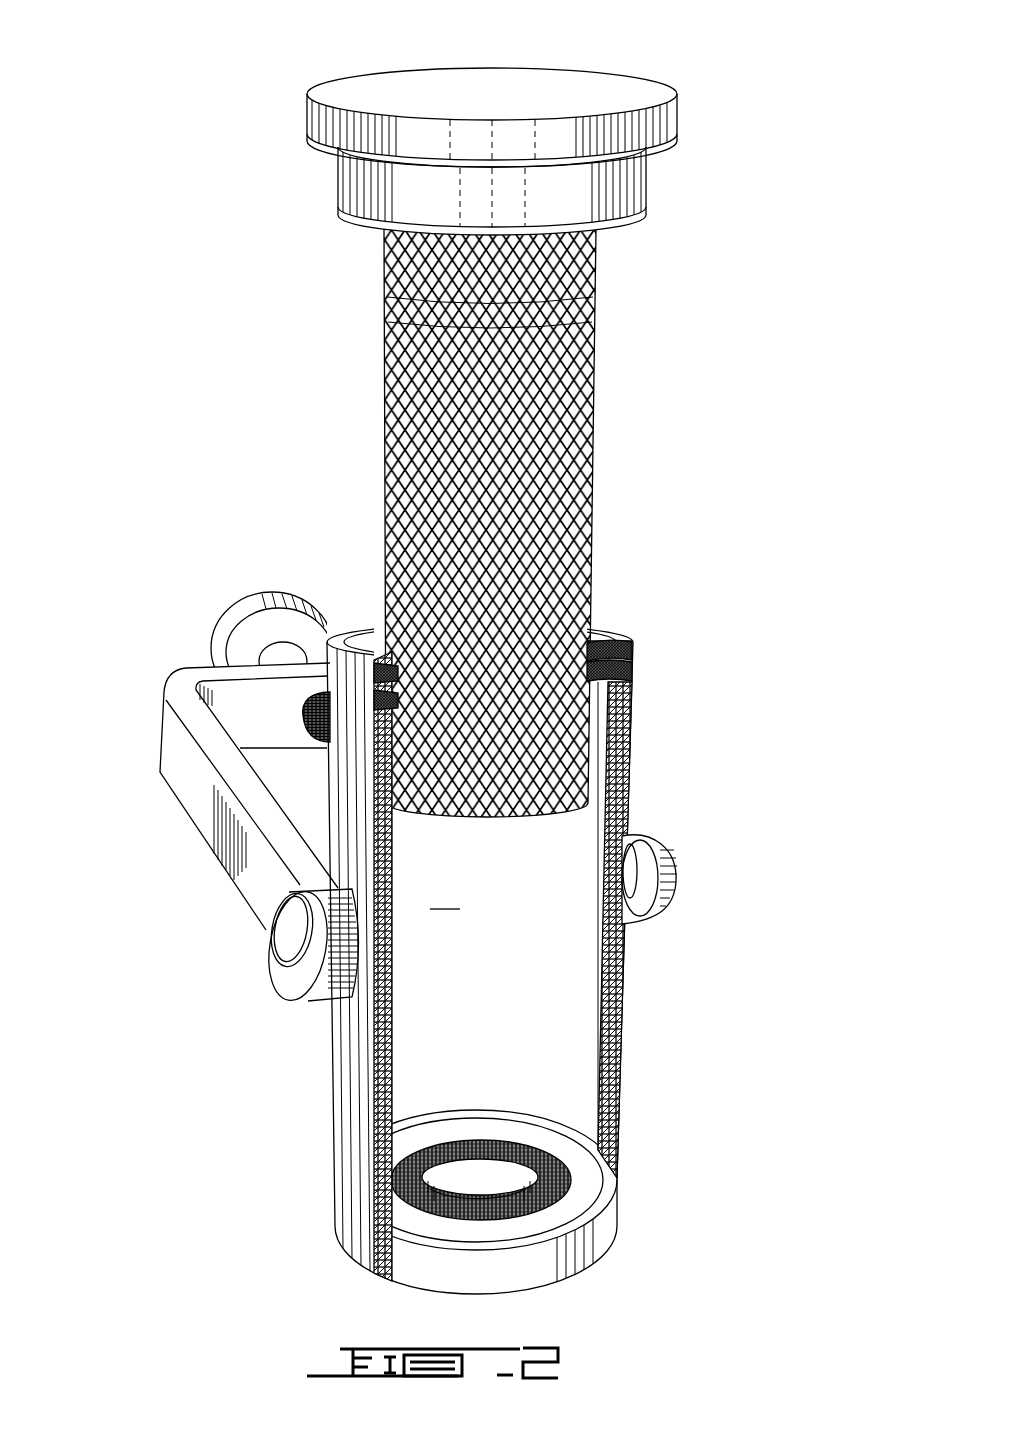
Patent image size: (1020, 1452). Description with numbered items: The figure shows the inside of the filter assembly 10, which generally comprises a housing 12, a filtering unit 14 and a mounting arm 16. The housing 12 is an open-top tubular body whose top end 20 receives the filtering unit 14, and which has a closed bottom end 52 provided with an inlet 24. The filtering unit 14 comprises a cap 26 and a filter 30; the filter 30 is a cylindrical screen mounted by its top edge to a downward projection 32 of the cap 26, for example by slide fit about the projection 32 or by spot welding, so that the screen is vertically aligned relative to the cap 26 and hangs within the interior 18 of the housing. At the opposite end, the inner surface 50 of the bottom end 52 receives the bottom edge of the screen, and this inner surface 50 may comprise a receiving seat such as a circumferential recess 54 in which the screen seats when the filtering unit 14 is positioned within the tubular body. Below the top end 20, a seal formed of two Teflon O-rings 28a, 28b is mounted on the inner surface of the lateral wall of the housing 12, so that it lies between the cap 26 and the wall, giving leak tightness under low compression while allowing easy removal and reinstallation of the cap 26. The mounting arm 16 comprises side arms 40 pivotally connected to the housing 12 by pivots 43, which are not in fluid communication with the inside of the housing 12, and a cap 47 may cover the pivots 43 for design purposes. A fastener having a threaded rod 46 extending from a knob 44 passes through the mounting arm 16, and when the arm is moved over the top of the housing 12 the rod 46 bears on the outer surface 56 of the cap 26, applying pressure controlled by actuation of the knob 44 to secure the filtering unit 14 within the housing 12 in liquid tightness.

The filter assembly 10 is at (727, 128).
The housing 12 is at (333, 1195).
The filtering unit 14 is at (600, 397).
The mounting arm 16 is at (163, 722).
The interior chamber 18 is at (445, 893).
The top end 20 is at (627, 630).
The inlet 24 is at (477, 1200).
The cap 26 is at (613, 181).
The O-ring 28a is at (633, 648).
The O-ring 28b is at (632, 679).
The filter 30 is at (383, 425).
The downward projection 32 is at (538, 243).
The side arms 40 is at (205, 800).
The pivots 43 is at (631, 873).
The knob 44 is at (257, 597).
The threaded rod 46 is at (307, 717).
The cap 47 is at (290, 935).
The inner surface 50 is at (582, 1197).
The bottom end 52 is at (580, 1243).
The circumferential recess 54 is at (552, 1175).
The outer surface 56 is at (610, 78).